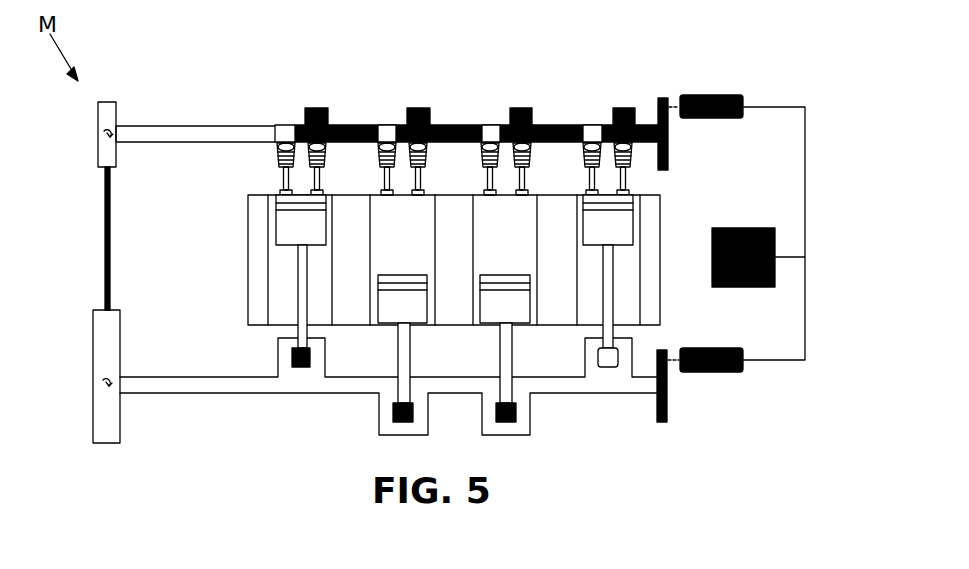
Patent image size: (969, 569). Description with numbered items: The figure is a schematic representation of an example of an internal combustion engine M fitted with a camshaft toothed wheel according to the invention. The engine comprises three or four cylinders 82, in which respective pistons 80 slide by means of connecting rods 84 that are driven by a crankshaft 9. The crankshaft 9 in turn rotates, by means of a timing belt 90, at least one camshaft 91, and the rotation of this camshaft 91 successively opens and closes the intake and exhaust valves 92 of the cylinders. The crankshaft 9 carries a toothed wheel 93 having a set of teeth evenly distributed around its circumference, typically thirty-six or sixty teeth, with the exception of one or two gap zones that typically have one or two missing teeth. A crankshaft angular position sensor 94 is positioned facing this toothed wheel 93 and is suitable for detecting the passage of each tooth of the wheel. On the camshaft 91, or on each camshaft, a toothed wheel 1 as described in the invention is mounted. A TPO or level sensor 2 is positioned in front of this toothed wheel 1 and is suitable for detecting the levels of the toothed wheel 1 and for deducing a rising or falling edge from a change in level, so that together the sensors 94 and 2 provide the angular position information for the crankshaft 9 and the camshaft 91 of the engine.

The toothed wheel 1 is at (658, 106).
The TPO or level sensor 2 is at (712, 95).
The crankshaft 9 is at (203, 386).
The piston 80 is at (275, 220).
The cylinder 82 is at (258, 252).
The connecting rod 84 is at (297, 297).
The timing belt 90 is at (98, 208).
The camshaft 91 is at (210, 134).
The intake and exhaust valves 92 is at (306, 113).
The toothed wheel 93 is at (667, 410).
The crankshaft angular position sensor 94 is at (717, 373).